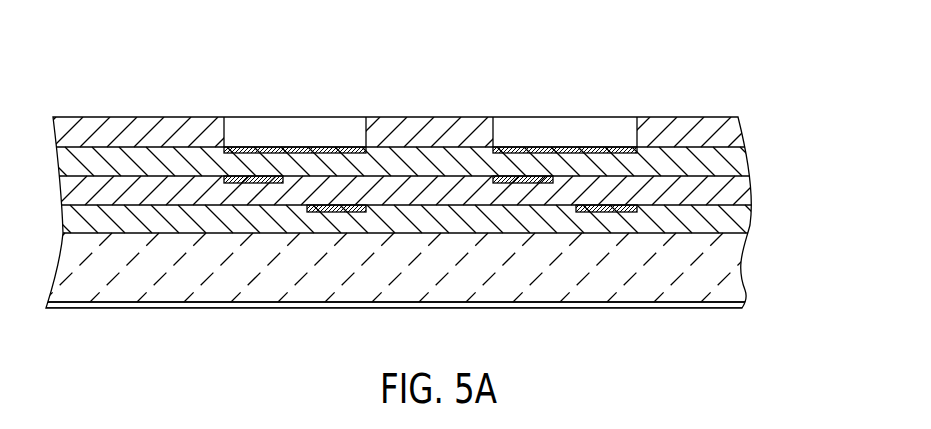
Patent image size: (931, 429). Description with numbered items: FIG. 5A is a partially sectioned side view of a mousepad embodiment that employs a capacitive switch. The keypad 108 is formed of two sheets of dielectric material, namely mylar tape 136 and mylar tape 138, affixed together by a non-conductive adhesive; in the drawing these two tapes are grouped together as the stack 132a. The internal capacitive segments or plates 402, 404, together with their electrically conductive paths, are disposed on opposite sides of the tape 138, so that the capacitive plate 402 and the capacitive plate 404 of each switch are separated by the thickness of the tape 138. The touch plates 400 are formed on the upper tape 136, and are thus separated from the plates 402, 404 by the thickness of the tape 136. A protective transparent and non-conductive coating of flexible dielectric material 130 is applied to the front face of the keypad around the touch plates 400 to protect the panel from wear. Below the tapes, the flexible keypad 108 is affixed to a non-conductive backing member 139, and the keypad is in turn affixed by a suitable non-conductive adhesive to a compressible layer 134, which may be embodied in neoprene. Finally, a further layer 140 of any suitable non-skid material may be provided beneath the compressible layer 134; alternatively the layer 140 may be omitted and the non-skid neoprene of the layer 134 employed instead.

The keypad 108 is at (513, 73).
The coating of flexible dielectric material 130 is at (727, 129).
The intermediate dielectric layer stack 132a is at (450, 173).
The mylar tape 136 is at (727, 160).
The mylar tape 138 is at (727, 185).
The backing member 139 is at (730, 223).
The compressible layer 134 is at (723, 266).
The layer of non-skid material 140 is at (743, 306).
The touch plate 400 is at (288, 147).
The capacitive plate 402 is at (247, 176).
The capacitive plate 404 is at (322, 212).